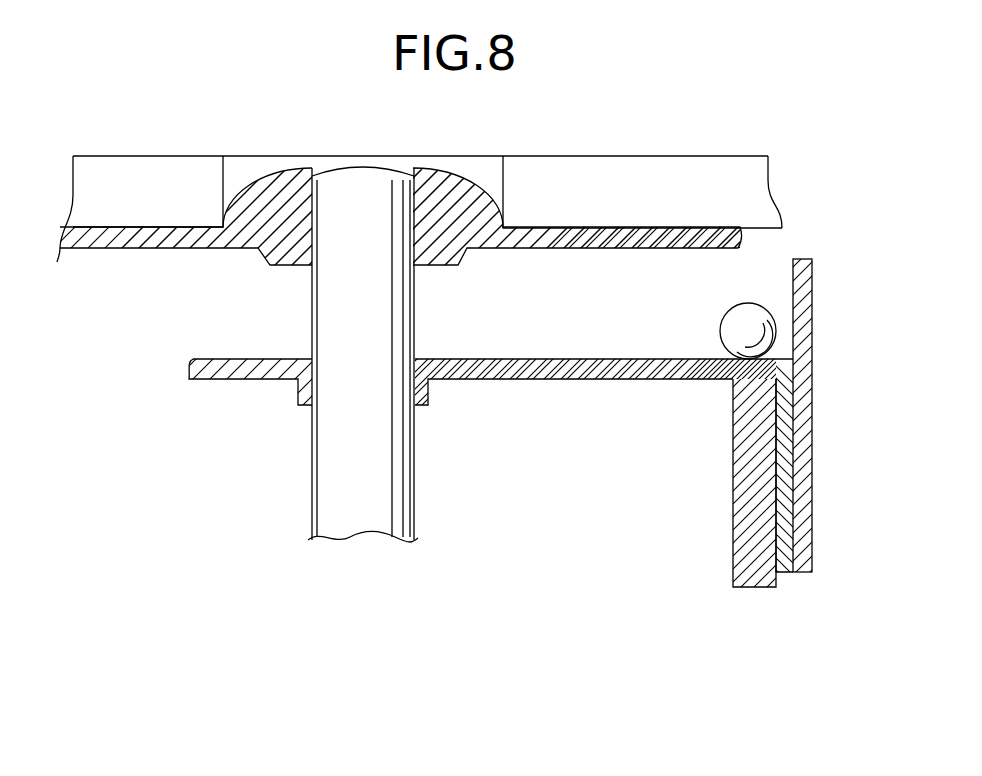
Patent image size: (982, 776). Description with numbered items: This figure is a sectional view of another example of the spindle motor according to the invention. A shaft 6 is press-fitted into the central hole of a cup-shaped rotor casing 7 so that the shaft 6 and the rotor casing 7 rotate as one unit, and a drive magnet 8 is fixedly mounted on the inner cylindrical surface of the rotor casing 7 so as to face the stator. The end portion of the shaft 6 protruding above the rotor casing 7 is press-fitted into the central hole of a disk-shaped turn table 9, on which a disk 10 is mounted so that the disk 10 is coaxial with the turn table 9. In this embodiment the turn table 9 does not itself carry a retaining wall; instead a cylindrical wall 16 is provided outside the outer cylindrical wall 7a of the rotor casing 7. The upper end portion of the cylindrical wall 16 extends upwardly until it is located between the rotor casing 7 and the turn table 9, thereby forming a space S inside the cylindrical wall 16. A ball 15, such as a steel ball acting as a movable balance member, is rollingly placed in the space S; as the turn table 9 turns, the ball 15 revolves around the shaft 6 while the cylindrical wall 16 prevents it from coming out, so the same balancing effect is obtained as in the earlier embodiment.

The shaft 6 is at (325, 493).
The rotor casing 7 is at (456, 372).
The outer cylindrical wall 7a is at (783, 574).
The drive magnet 8 is at (750, 490).
The turn table 9 is at (535, 244).
The disk 10 is at (727, 158).
The ball 15 is at (722, 330).
The cylindrical wall 16 is at (800, 573).
The space S is at (713, 282).